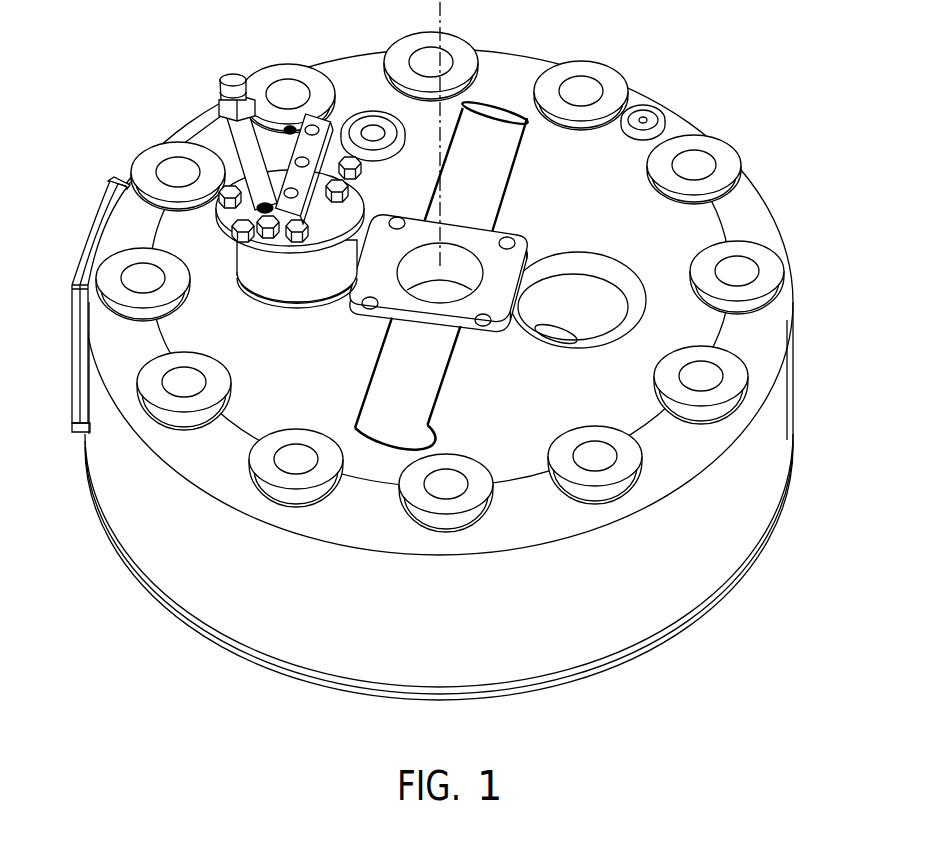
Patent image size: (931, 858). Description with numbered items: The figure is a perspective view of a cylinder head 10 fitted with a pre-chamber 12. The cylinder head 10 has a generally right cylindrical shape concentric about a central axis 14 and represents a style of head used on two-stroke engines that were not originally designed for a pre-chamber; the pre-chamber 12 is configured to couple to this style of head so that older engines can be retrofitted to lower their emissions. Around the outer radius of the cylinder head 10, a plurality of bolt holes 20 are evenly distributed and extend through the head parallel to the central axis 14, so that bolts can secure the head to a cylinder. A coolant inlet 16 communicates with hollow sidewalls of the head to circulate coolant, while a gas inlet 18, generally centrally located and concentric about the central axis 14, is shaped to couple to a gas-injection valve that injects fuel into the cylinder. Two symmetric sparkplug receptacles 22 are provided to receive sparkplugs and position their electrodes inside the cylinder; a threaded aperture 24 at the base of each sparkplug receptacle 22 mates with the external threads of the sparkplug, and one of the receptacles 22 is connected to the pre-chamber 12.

The cylinder head 10 is at (657, 102).
The pre-chamber 12 is at (240, 247).
The central axis 14 is at (440, 133).
The coolant inlet 16 is at (122, 188).
The gas inlet 18 is at (473, 256).
The bolt holes 20 is at (440, 52).
The sparkplug receptacle 22 is at (607, 287).
The threaded aperture 24 is at (553, 342).